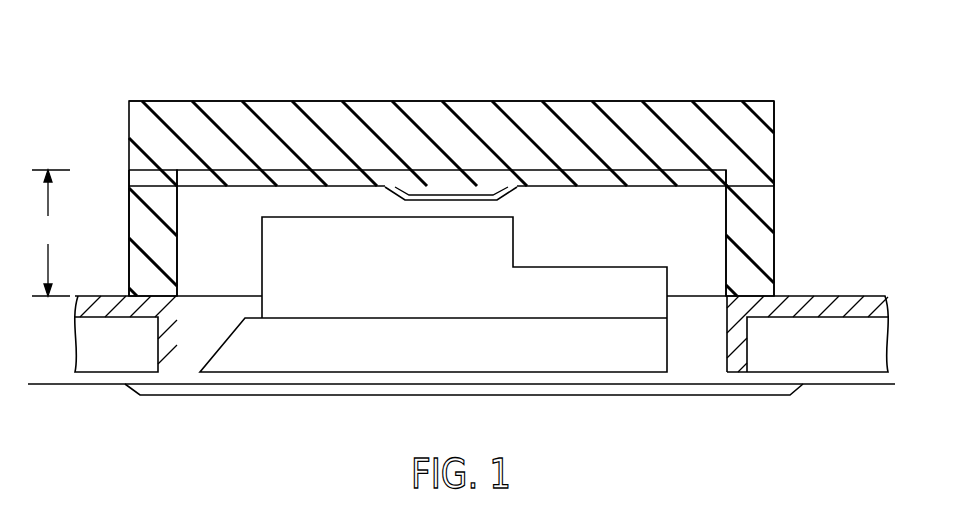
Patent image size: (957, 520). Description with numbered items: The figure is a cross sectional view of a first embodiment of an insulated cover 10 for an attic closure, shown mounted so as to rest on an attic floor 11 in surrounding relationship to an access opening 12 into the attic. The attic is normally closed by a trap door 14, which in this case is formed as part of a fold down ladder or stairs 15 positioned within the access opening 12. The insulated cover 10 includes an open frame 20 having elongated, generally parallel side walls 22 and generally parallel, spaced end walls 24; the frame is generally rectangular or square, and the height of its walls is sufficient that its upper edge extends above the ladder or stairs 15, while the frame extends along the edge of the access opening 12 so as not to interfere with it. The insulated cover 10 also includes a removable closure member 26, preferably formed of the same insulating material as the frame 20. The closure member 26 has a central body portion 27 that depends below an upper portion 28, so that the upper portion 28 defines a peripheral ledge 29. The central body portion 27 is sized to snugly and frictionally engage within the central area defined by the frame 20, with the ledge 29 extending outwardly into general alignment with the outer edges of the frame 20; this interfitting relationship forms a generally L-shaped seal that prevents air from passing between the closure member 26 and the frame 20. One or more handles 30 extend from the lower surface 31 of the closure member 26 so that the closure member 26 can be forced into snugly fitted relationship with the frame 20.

The insulated cover 10 is at (453, 63).
The attic floor 11 is at (861, 296).
The access opening 12 is at (704, 366).
The trap door 14 is at (362, 397).
The fold down ladder or stairs 15 is at (617, 366).
The open frame 20 is at (791, 175).
The side walls 22 is at (713, 233).
The end walls 24 is at (128, 253).
The removable closure member 26 is at (328, 91).
The central body portion 27 is at (692, 187).
The upper portion 28 is at (768, 138).
The peripheral ledge 29 is at (130, 175).
The handles 30 is at (385, 191).
The lower surface 31 is at (592, 188).